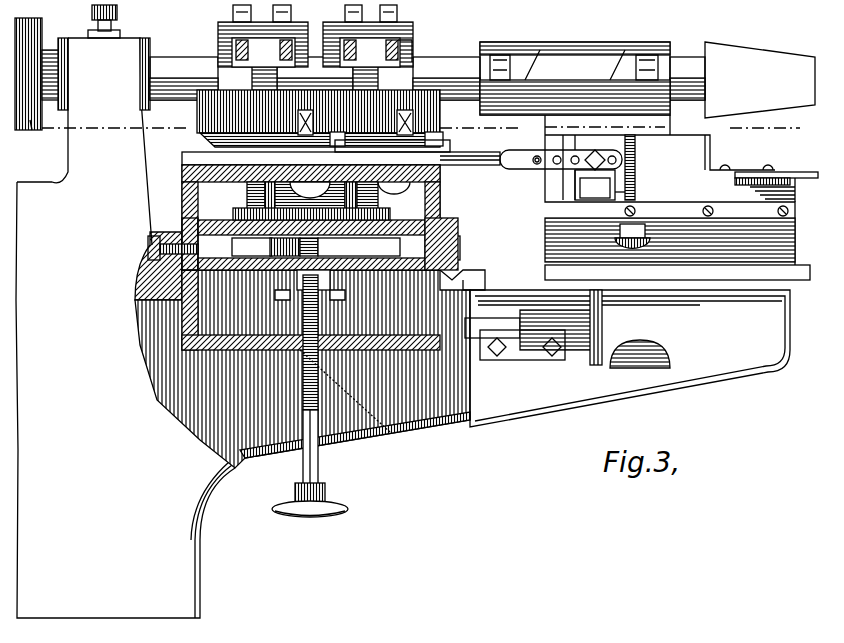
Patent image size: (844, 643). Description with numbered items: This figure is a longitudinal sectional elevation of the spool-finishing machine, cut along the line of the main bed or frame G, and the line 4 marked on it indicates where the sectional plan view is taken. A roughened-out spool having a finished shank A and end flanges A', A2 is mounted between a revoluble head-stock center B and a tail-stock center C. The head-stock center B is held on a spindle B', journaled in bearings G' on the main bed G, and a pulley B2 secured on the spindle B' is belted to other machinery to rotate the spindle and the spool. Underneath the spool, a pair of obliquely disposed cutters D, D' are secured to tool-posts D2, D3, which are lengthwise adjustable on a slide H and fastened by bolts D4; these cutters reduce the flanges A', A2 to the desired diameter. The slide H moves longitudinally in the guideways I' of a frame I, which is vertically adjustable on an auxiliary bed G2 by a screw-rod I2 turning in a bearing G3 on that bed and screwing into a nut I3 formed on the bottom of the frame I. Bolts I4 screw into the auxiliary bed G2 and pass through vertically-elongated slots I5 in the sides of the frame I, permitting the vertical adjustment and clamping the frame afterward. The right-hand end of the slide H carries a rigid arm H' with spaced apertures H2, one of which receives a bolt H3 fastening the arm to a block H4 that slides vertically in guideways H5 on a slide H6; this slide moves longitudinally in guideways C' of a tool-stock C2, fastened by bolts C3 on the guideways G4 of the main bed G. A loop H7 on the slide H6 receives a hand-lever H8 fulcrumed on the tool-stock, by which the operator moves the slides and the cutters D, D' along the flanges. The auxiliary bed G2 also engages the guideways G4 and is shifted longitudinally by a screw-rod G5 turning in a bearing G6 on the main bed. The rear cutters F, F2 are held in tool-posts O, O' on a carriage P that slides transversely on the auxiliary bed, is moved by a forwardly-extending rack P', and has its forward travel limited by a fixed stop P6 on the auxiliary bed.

The main bed or frame G is at (403, 328).
The bearings G' is at (105, 125).
The spindle B' is at (37, 74).
The pulley B2 is at (33, 128).
The section line 4 is at (18, 140).
The head-stock center B is at (184, 67).
The shank A is at (315, 78).
The tail-stock center C is at (552, 70).
The end flange A' is at (264, 76).
The end flange A2 is at (365, 76).
The rear cutter F is at (250, 58).
The tool-post O is at (268, 16).
The tool-post O' is at (370, 36).
The rear cutter F2 is at (410, 50).
The longitudinally-moving cutter D is at (304, 118).
The longitudinally-moving cutter D' is at (376, 121).
The bolts D4 is at (444, 137).
The tool-post D3 is at (440, 147).
The guideways I' is at (329, 157).
The frame I is at (307, 217).
The carriage P is at (306, 201).
The tool-post D2 is at (394, 190).
The rack P' is at (266, 247).
The fixed stop P6 is at (350, 247).
The bolts I4 is at (150, 246).
The vertically-elongated slots I5 is at (190, 232).
The auxiliary bed G2 is at (440, 230).
The bearing G3 is at (300, 280).
The screw-rod I2 is at (318, 462).
The nut I3 is at (392, 432).
The tool-stock C2 is at (538, 216).
The guideways C' is at (677, 193).
The bolts C3 is at (630, 240).
The rigid arm H' is at (561, 171).
The slide H is at (529, 167).
The spaced apertures H2 is at (540, 156).
The bolt H3 is at (635, 157).
The block H4 is at (595, 185).
The guideways H5 is at (618, 192).
The slide H6 is at (710, 150).
The loop H7 is at (762, 170).
The hand-lever H8 is at (797, 172).
The guideways G4 is at (520, 270).
The screw-rod G5 is at (472, 352).
The bearing G6 is at (522, 355).